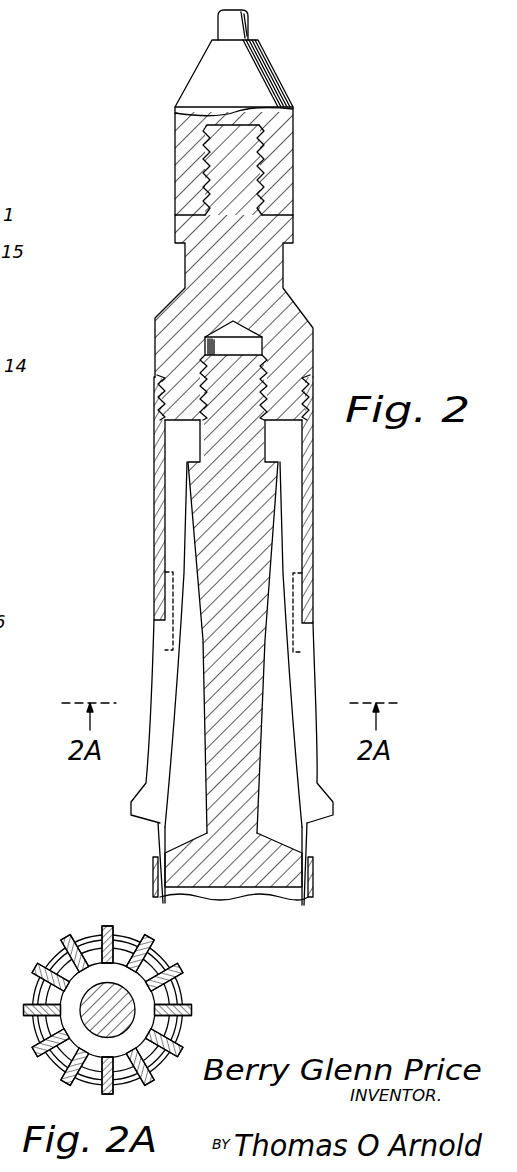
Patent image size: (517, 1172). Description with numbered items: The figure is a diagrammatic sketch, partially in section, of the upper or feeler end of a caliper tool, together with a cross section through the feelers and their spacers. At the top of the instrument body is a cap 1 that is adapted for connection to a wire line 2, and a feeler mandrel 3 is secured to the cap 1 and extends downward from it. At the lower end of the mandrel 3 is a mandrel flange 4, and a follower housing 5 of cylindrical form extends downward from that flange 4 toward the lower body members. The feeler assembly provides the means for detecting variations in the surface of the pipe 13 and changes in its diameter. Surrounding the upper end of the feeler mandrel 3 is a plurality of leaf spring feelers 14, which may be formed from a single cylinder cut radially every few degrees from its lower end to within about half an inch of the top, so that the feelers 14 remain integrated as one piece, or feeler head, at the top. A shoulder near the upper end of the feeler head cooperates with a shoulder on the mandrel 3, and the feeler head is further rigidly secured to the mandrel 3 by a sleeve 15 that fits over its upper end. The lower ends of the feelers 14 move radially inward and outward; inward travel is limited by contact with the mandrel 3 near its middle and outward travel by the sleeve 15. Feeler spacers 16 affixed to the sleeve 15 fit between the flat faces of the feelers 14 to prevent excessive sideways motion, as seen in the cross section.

In FIG. 2, the cap 1 is at (288, 313).
In FIG. 2, the wire line 2 is at (228, 23).
In FIG. 2, the feeler mandrel 3 is at (266, 496).
In FIG. 2A, the feeler mandrel 3 is at (125, 1015).
In FIG. 2, the mandrel flange 4 is at (288, 869).
In FIG. 2, the follower housing 5 is at (10, 429).
In FIG. 2, the pipe 13 is at (14, 293).
In FIG. 2, the leaf spring feelers 14 is at (318, 808).
In FIG. 2A, the leaf spring feelers 14 is at (62, 930).
In FIG. 2, the sleeve 15 is at (308, 521).
In FIG. 2A, the sleeve 15 is at (181, 987).
In FIG. 2, the feeler spacers 16 is at (300, 638).
In FIG. 2A, the feeler spacers 16 is at (55, 952).